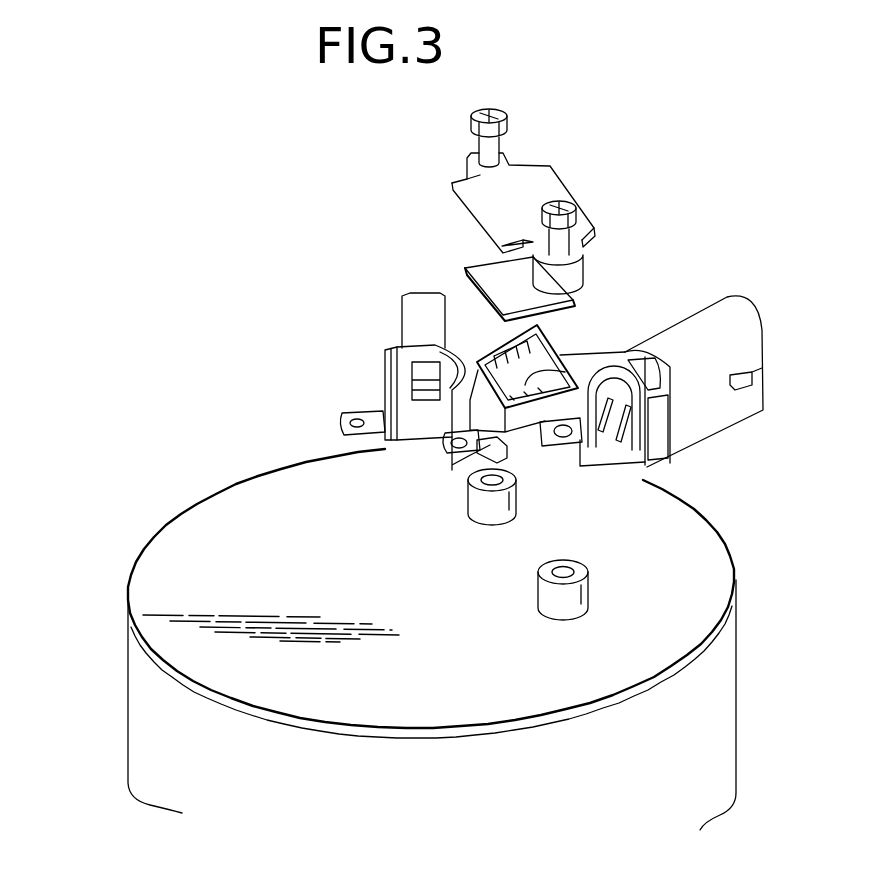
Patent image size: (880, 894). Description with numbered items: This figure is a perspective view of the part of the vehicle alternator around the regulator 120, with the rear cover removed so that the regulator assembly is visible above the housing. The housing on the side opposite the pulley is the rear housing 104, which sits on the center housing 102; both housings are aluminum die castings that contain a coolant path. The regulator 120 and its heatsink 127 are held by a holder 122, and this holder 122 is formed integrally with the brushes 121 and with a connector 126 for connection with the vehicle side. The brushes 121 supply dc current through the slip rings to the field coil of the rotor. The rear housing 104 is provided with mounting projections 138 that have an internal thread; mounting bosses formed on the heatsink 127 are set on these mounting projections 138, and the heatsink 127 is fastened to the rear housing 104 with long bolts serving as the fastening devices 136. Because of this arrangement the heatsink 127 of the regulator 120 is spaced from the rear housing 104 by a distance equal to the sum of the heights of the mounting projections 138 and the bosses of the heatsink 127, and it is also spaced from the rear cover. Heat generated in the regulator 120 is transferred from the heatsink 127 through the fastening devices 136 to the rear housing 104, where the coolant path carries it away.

The center housing 102 is at (145, 735).
The rear housing 104 is at (150, 580).
The regulator 120 is at (510, 290).
The brushes 121 is at (340, 429).
The holder 122 is at (580, 343).
The connector 126 is at (717, 408).
The heatsink 127 is at (547, 187).
The fastening devices 136 is at (470, 130).
The mounting projections 138 is at (516, 500).